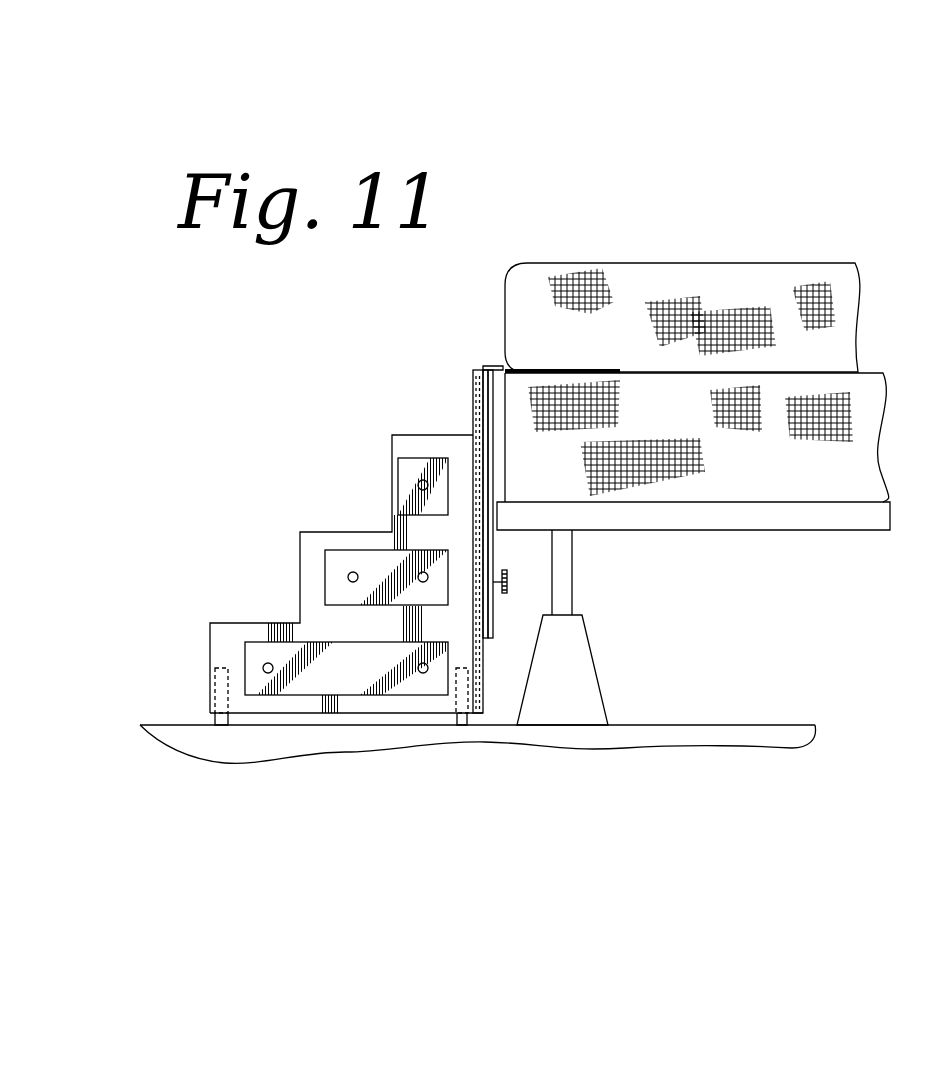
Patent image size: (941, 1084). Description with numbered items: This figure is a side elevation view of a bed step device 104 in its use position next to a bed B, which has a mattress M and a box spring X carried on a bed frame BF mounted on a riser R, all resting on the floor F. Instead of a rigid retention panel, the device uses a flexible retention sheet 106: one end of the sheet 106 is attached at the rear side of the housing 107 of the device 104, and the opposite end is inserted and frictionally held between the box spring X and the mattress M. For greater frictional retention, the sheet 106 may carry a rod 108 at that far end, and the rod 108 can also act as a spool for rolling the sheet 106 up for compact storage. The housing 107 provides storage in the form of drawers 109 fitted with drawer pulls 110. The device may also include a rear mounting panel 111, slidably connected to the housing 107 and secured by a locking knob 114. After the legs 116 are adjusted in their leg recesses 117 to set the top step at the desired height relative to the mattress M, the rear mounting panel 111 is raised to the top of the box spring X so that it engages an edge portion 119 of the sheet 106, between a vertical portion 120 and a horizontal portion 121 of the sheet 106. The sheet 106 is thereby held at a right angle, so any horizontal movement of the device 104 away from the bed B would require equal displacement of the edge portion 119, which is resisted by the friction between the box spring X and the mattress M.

The bed step device 104 is at (270, 422).
The flexible retention sheet 106 is at (480, 322).
The housing 107 is at (386, 634).
The rod 108 is at (612, 372).
The drawers 109 is at (418, 468).
The drawer pulls 110 is at (423, 485).
The rear mounting panel 111 is at (473, 372).
The locking knob 114 is at (508, 582).
The legs 116 is at (220, 727).
The leg recesses 117 is at (215, 688).
The edge portion 119 is at (488, 370).
The vertical portion 120 is at (487, 410).
The horizontal portion 121 is at (500, 366).
The bed B is at (668, 232).
The mattress M is at (592, 357).
The box spring X is at (772, 472).
The bed frame BF is at (680, 531).
The riser R is at (569, 705).
The floor F is at (650, 740).